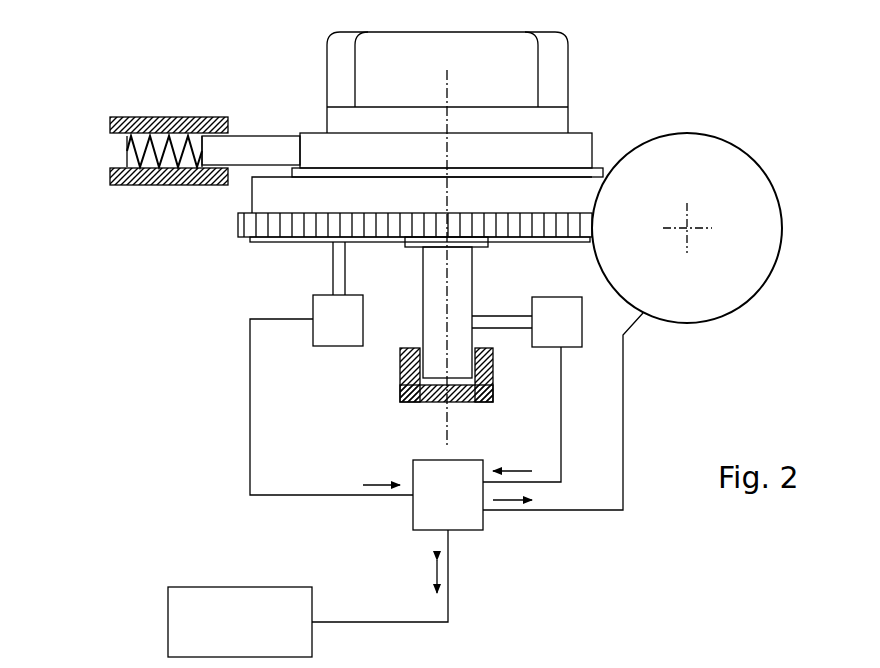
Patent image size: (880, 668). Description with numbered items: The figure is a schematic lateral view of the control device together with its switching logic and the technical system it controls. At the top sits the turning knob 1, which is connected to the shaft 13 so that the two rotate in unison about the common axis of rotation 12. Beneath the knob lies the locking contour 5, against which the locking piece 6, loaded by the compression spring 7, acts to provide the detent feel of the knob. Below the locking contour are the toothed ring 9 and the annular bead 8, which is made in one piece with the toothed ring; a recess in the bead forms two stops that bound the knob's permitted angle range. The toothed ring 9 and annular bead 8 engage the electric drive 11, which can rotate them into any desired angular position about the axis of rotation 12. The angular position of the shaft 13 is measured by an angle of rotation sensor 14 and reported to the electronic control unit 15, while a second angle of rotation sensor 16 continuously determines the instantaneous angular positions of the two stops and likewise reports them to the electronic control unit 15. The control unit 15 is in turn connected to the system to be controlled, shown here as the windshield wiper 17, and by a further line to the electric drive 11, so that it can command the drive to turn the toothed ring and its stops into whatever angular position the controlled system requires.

The turning knob 1 is at (523, 57).
The locking contour 5 is at (576, 153).
The locking piece 6 is at (260, 150).
The compression spring 7 is at (118, 152).
The annular bead 8 is at (270, 193).
The toothed ring 9 is at (232, 227).
The electric drive 11 is at (733, 182).
The axis of rotation 12 is at (448, 417).
The shaft 13 is at (435, 277).
The angle of rotation sensor 14 is at (527, 389).
The electronic control unit 15 is at (477, 467).
The angle of rotation sensor 16 is at (331, 368).
The windshield wiper 17 is at (240, 622).